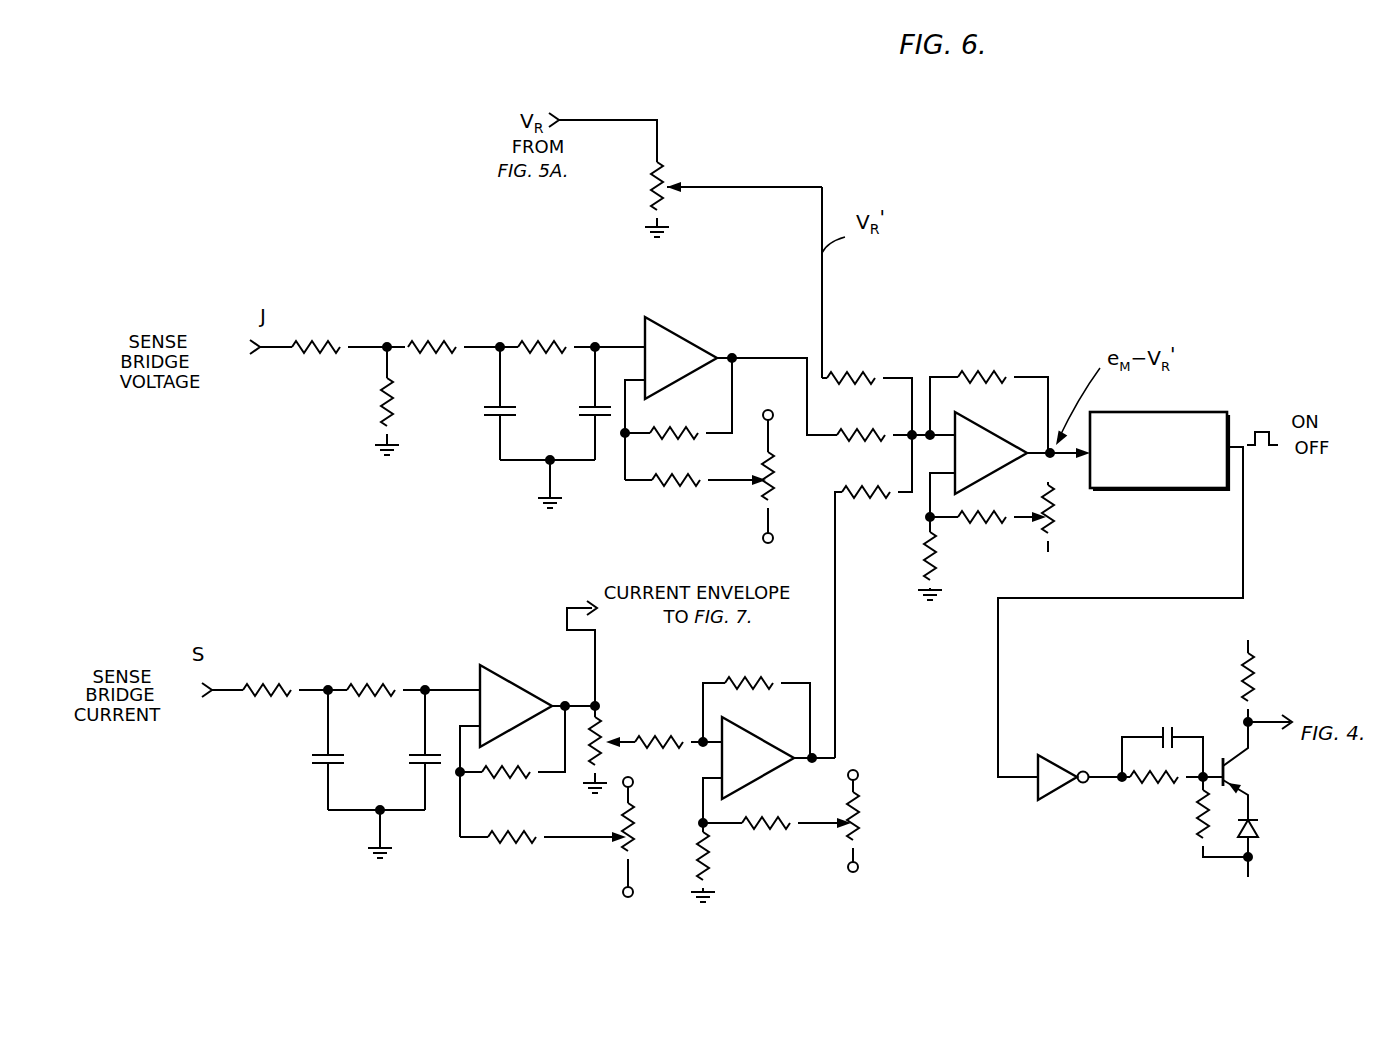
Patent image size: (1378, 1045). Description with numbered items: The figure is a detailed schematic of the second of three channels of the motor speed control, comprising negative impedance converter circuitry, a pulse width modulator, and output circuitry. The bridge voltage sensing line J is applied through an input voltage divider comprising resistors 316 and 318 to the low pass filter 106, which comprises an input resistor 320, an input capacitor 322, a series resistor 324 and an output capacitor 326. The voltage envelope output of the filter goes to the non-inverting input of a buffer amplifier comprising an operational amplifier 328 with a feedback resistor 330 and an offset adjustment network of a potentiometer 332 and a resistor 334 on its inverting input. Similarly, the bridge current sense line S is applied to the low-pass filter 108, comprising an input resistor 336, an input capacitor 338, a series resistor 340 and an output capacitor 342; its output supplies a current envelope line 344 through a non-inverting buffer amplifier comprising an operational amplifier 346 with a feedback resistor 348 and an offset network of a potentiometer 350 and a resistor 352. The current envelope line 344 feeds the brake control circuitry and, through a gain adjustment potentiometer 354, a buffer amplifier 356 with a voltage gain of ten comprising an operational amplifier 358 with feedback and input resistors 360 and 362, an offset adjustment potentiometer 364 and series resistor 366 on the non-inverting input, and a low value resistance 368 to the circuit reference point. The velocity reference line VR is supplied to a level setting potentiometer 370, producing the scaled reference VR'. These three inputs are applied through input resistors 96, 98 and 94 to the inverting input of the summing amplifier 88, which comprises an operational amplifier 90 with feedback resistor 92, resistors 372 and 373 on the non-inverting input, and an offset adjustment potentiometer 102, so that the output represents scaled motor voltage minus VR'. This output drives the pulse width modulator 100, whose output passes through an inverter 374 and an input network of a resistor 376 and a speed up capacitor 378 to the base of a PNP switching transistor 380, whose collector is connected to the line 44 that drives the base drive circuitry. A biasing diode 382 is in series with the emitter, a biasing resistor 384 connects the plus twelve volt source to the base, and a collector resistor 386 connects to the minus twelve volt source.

The line 44 is at (1264, 718).
The summing amplifier 88 is at (1060, 356).
The operational amplifier 90 is at (986, 435).
The feedback resistor 92 is at (975, 383).
The input resistor 94 is at (850, 382).
The input resistor 96 is at (852, 439).
The input resistor 98 is at (878, 496).
The pulse width modulator 100 is at (1183, 412).
The offset adjustment potentiometer 102 is at (1052, 511).
The low pass filter 106 is at (604, 276).
The low-pass filter 108 is at (450, 658).
The resistor 316 is at (346, 343).
The resistor 318 is at (370, 399).
The input resistor 320 is at (442, 343).
The input capacitor 322 is at (480, 406).
The series resistor 324 is at (560, 343).
The output capacitor 326 is at (582, 405).
The operational amplifier 328 is at (678, 339).
The feedback resistor 330 is at (661, 430).
The potentiometer 332 is at (764, 508).
The resistor 334 is at (672, 495).
The input resistor 336 is at (274, 681).
The input capacitor 338 is at (324, 752).
The series resistor 340 is at (394, 681).
The output capacitor 342 is at (418, 752).
The current envelope line 344 is at (598, 676).
The operational amplifier 346 is at (512, 679).
The feedback resistor 348 is at (512, 765).
The potentiometer 350 is at (618, 852).
The resistor 352 is at (522, 826).
The gain adjustment potentiometer 354 is at (604, 768).
The buffer amplifier 356 is at (814, 662).
The operational amplifier 358 is at (743, 732).
The feedback resistor 360 is at (750, 680).
The input resistor 362 is at (674, 734).
The potentiometer 364 is at (861, 812).
The series resistor 366 is at (748, 822).
The low value resistance 368 is at (712, 859).
The level setting potentiometer 370 is at (663, 164).
The resistor 372 is at (924, 552).
The resistor 373 is at (1006, 526).
The inverter 374 is at (1075, 768).
The resistor 376 is at (1174, 786).
The speed up capacitor 378 is at (1162, 732).
The PNP switching transistor 380 is at (1240, 772).
The biasing diode 382 is at (1262, 836).
The biasing resistor 384 is at (1196, 836).
The collector resistor 386 is at (1238, 674).